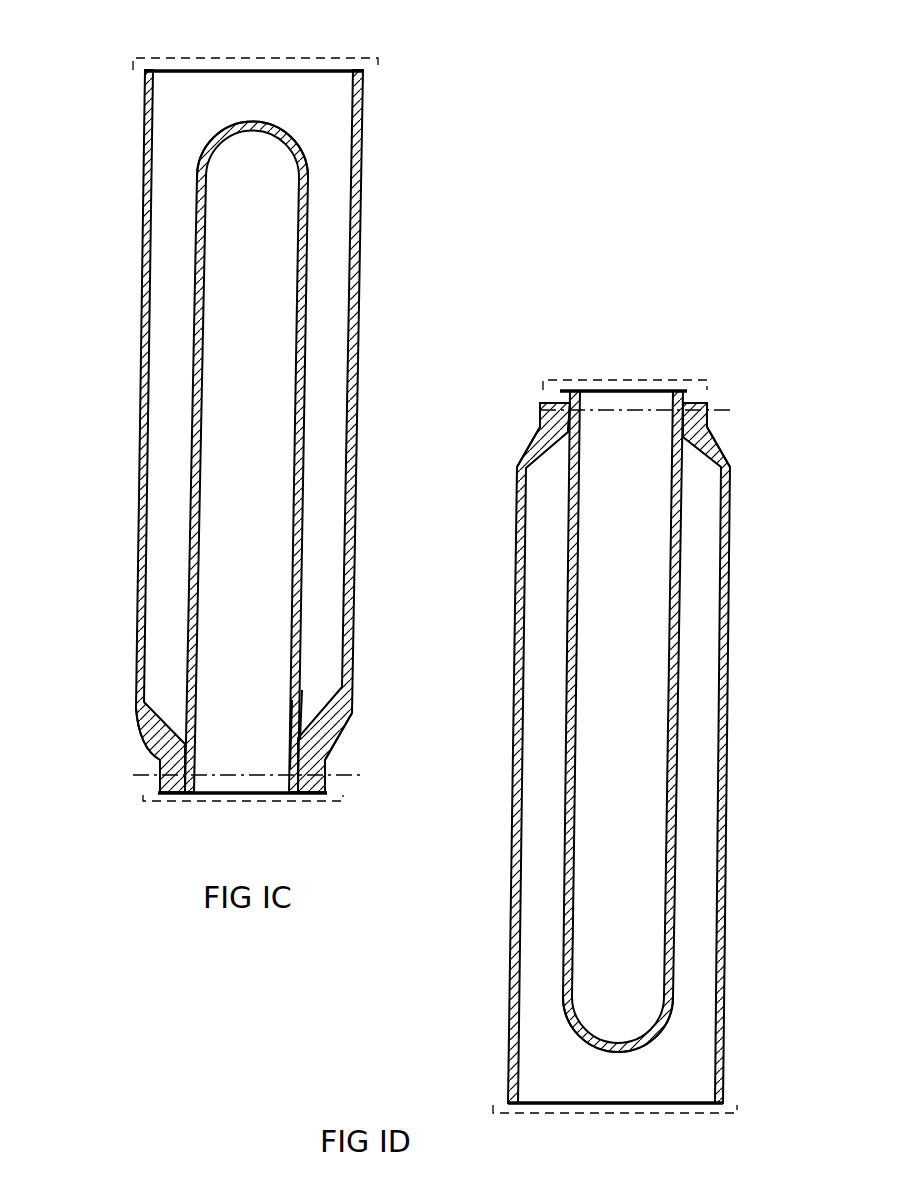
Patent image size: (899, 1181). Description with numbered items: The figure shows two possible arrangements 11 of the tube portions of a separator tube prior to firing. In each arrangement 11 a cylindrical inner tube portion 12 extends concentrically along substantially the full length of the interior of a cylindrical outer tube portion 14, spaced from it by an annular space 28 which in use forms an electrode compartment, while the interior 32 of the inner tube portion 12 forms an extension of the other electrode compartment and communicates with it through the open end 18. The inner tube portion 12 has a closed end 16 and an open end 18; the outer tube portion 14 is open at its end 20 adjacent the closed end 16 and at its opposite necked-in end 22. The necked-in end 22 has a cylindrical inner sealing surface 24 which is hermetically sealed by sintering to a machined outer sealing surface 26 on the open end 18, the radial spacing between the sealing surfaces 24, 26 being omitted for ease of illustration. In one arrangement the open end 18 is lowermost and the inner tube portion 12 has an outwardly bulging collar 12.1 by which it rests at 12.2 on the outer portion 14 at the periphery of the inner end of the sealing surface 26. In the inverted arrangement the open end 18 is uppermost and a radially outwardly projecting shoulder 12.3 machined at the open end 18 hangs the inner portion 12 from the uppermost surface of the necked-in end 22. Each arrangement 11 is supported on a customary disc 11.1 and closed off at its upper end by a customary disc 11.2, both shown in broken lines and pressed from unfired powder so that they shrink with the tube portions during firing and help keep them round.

In FIG. 1C, the arrangement 11 is at (398, 57).
In FIG. 1D, the arrangement 11 is at (691, 342).
In FIG. 1C, the lower disc 11.1 is at (292, 805).
In FIG. 1D, the lower disc 11.1 is at (633, 1110).
In FIG. 1C, the upper disc 11.2 is at (303, 65).
In FIG. 1D, the upper disc 11.2 is at (603, 378).
In FIG. 1C, the inner tube portion 12 is at (302, 228).
In FIG. 1D, the inner tube portion 12 is at (668, 630).
In FIG. 1C, the outwardly bulging collar 12.1 is at (299, 717).
In FIG. 1C, the resting location 12.2 is at (294, 732).
In FIG. 1D, the circumferential shoulder 12.3 is at (560, 397).
In FIG. 1C, the outer tube portion 14 is at (354, 280).
In FIG. 1D, the outer tube portion 14 is at (720, 662).
In FIG. 1C, the closed end 16 is at (271, 121).
In FIG. 1D, the closed end 16 is at (571, 1041).
In FIG. 1C, the open end 18 is at (244, 797).
In FIG. 1D, the open end 18 is at (630, 387).
In FIG. 1C, the open end of outer tube portion 20 is at (263, 67).
In FIG. 1D, the open end of outer tube portion 20 is at (561, 1107).
In FIG. 1C, the necked-in end 22 is at (146, 751).
In FIG. 1D, the necked-in end 22 is at (532, 414).
In FIG. 1C, the inner sealing surface 24 is at (194, 761).
In FIG. 1D, the inner sealing surface 24 is at (679, 429).
In FIG. 1C, the outer sealing surface 26 is at (301, 770).
In FIG. 1D, the outer sealing surface 26 is at (564, 425).
In FIG. 1C, the annular space 28 is at (331, 382).
In FIG. 1D, the annular space 28 is at (699, 741).
In FIG. 1C, the interior of inner tube portion 32 is at (269, 475).
In FIG. 1D, the interior of inner tube portion 32 is at (644, 825).